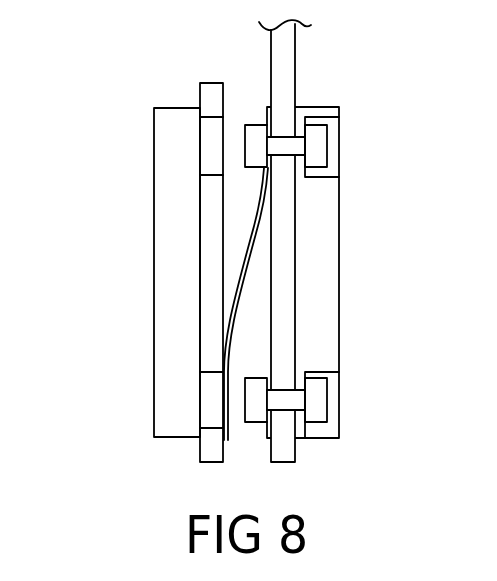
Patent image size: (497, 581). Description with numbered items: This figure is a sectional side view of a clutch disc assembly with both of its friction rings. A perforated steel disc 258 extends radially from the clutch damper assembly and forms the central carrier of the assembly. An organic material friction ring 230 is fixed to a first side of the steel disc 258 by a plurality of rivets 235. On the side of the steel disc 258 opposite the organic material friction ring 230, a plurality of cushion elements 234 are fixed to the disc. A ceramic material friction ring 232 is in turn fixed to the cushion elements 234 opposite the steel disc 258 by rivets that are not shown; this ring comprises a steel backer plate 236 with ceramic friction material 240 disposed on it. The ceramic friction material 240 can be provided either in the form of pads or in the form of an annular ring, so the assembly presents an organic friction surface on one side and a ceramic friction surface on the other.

The organic material friction ring 230 is at (339, 274).
The ceramic material friction ring 232 is at (153, 438).
The cushion elements 234 is at (253, 239).
The rivets 235 is at (327, 146).
The steel backer plate 236 is at (211, 83).
The ceramic friction material 240 is at (154, 305).
The perforated steel disc 258 is at (295, 78).